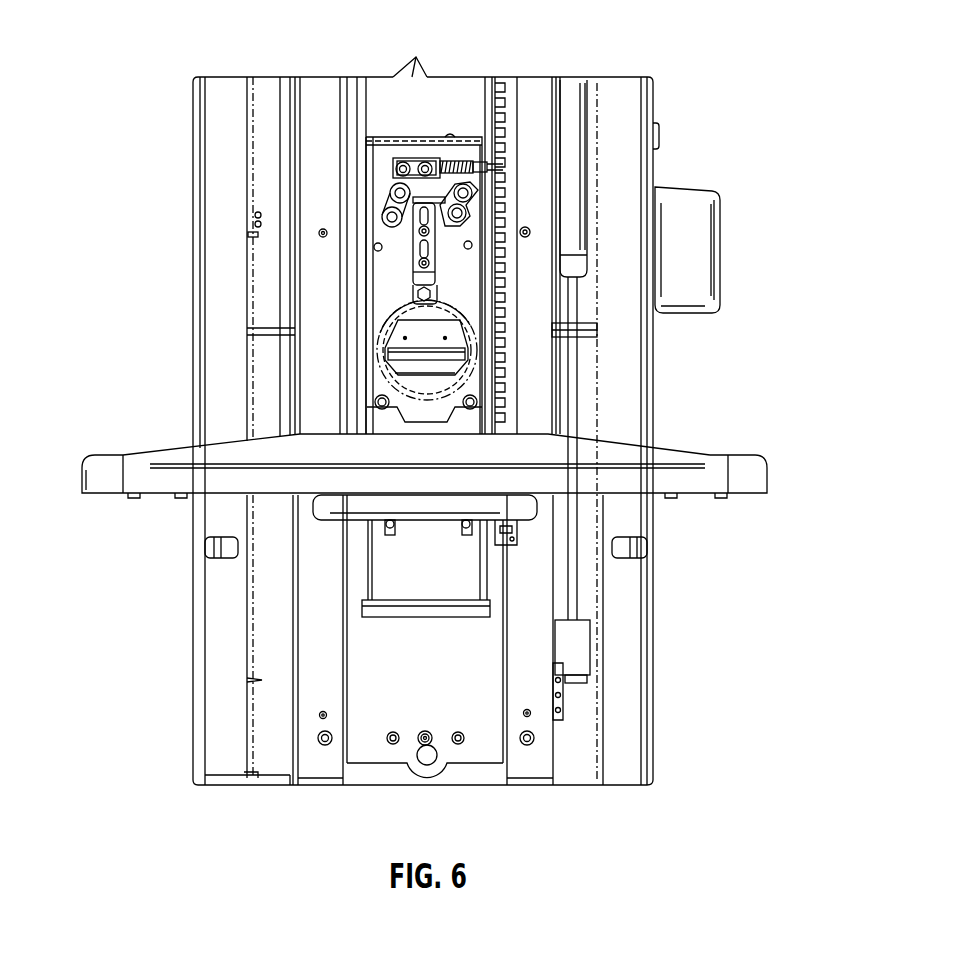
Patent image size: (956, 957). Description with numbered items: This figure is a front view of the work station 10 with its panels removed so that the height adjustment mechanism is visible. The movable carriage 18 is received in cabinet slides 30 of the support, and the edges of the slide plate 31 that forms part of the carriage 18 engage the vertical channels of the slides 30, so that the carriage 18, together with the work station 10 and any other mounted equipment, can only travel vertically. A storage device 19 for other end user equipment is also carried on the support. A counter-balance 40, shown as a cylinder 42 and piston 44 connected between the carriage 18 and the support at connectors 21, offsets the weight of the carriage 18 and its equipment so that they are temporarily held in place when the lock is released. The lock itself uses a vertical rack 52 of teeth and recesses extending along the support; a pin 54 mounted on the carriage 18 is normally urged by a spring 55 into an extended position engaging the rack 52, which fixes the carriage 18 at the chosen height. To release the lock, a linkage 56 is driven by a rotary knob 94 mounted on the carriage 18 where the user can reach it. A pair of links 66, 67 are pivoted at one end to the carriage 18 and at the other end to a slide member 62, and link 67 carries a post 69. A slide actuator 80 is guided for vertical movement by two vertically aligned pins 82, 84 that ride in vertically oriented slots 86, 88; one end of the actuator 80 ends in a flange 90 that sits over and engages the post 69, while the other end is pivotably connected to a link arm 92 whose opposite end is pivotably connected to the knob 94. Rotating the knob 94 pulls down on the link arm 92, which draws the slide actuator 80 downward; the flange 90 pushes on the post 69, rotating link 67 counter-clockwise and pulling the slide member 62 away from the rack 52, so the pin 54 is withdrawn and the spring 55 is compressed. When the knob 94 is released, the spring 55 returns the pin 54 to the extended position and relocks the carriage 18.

The work station 10 is at (755, 455).
The movable carriage 18 is at (655, 584).
The storage device 19 is at (720, 258).
The connector 21 is at (573, 658).
The cabinet slide 30 is at (326, 773).
The slide plate 31 is at (375, 265).
The counter-balance 40 is at (588, 157).
The cylinder 42 is at (572, 202).
The piston 44 is at (583, 590).
The vertical rack 52 is at (507, 260).
The pin 54 is at (500, 167).
The spring 55 is at (470, 161).
The linkage 56 is at (380, 190).
The slide member 62 is at (413, 190).
The link 66 is at (391, 196).
The link 67 is at (476, 202).
The post 69 is at (440, 218).
The slide actuator 80 is at (417, 222).
The pin 82 is at (374, 247).
The pin 84 is at (413, 287).
The slot 86 is at (430, 268).
The slot 88 is at (383, 217).
The flange 90 is at (437, 197).
The link arm 92 is at (470, 307).
The rotary knob 94 is at (397, 355).